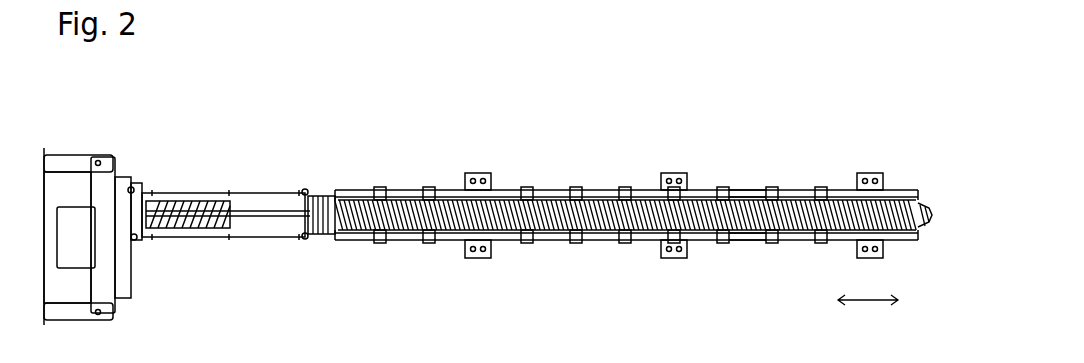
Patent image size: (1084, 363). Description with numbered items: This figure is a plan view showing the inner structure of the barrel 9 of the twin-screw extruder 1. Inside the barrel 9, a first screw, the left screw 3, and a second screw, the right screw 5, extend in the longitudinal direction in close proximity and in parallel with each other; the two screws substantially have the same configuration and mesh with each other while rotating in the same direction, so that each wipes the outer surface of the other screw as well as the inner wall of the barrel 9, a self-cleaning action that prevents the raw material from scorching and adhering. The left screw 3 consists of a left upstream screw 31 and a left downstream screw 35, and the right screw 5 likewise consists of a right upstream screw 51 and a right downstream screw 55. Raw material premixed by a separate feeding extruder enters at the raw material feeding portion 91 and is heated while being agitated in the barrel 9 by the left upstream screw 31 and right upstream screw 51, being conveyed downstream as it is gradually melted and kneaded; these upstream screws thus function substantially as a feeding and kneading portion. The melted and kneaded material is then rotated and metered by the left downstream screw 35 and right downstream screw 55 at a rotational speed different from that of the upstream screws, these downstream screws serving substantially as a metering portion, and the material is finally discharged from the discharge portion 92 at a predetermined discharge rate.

The twin-screw extruder 1 is at (816, 132).
The first screw 3 is at (672, 125).
The first upstream screw 31 is at (669, 187).
The first downstream screw 35 is at (748, 188).
The second screw 5 is at (672, 300).
The second upstream screw 51 is at (660, 243).
The second downstream screw 55 is at (737, 243).
The barrel 9 is at (503, 190).
The raw material feeding portion 91 is at (362, 240).
The discharge portion 92 is at (925, 231).